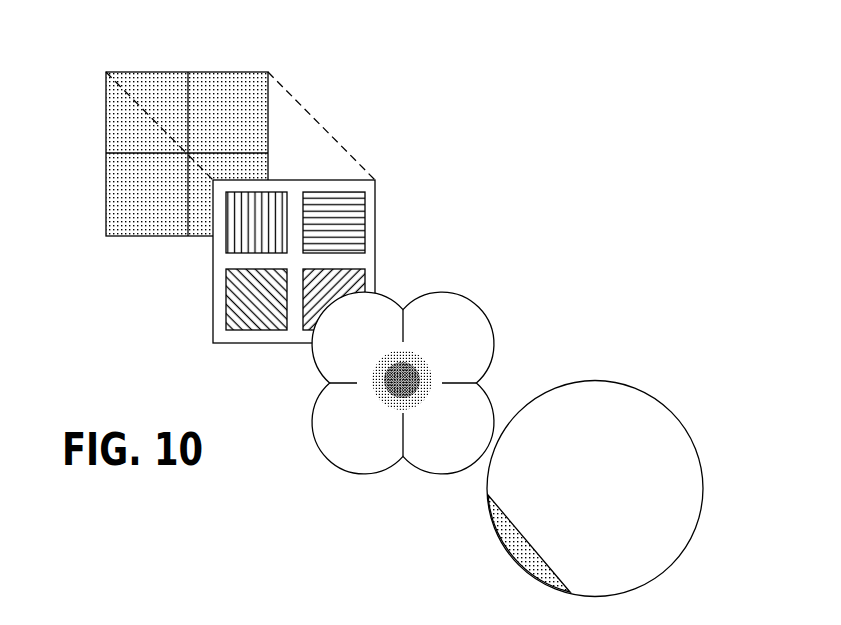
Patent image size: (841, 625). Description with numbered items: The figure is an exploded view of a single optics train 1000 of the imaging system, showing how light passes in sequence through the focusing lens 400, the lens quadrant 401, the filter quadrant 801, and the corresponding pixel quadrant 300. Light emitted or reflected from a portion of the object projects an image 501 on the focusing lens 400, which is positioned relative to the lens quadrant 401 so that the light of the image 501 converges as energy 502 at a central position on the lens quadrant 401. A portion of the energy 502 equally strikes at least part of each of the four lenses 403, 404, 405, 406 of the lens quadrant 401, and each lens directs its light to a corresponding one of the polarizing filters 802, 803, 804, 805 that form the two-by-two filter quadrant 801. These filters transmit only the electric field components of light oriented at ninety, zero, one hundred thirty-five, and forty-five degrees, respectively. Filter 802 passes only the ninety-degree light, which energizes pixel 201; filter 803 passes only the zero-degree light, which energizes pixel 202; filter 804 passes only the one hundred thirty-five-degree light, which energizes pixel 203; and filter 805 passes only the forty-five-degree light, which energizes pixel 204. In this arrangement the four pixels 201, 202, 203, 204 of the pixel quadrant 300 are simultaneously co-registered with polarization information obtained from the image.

The optics train 1000 is at (541, 149).
The pixel quadrant 300 is at (212, 73).
The pixel 201 is at (182, 107).
The pixel 202 is at (260, 107).
The pixel 203 is at (182, 179).
The pixel 204 is at (228, 194).
The filter quadrant 801 is at (376, 194).
The polarizing filter 802 is at (230, 237).
The polarizing filter 803 is at (338, 225).
The polarizing filter 804 is at (237, 288).
The polarizing filter 805 is at (348, 277).
The lens quadrant 401 is at (470, 294).
The lens 403 is at (720, 211).
The lens 404 is at (463, 337).
The lens 405 is at (724, 311).
The lens 406 is at (463, 444).
The energy 502 is at (418, 368).
The focusing lens 400 is at (648, 487).
The image 501 is at (515, 535).